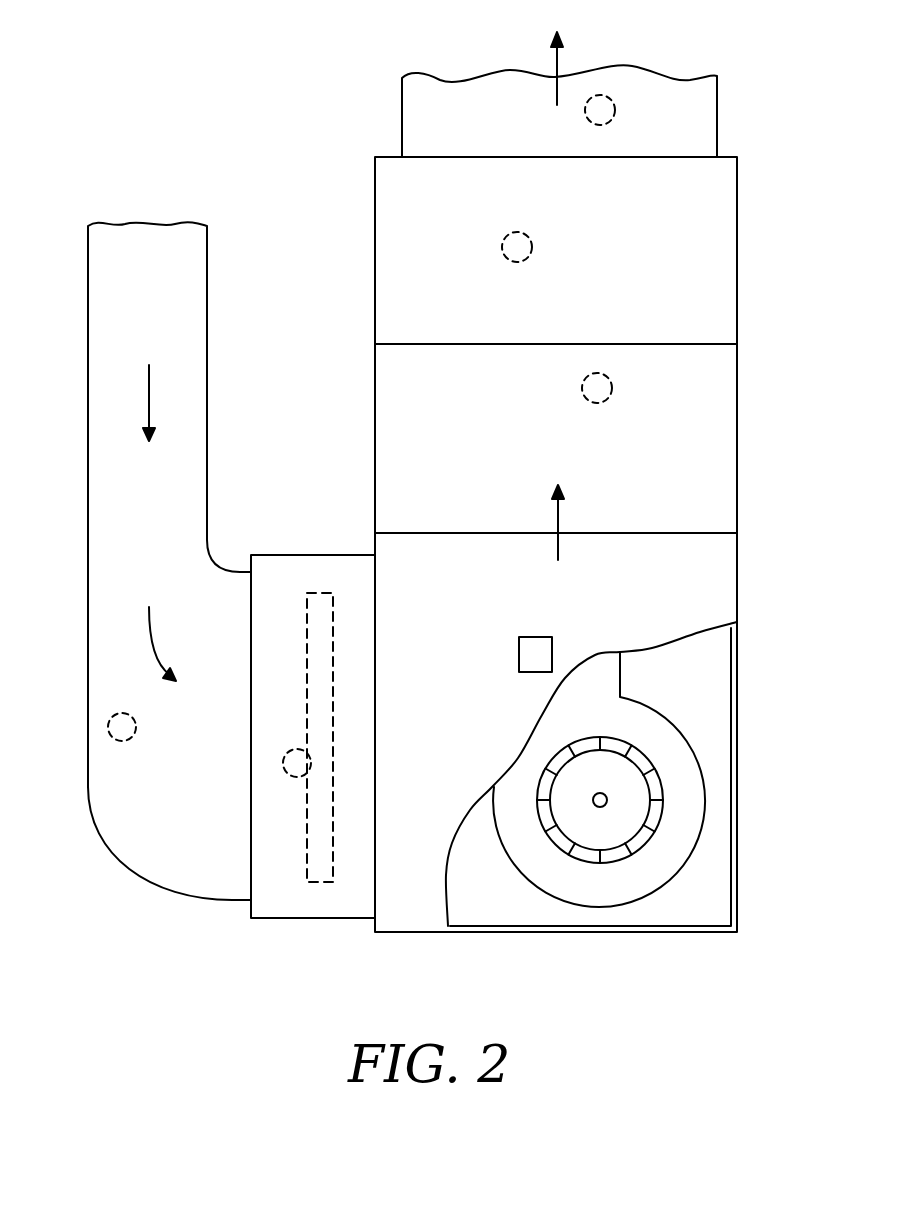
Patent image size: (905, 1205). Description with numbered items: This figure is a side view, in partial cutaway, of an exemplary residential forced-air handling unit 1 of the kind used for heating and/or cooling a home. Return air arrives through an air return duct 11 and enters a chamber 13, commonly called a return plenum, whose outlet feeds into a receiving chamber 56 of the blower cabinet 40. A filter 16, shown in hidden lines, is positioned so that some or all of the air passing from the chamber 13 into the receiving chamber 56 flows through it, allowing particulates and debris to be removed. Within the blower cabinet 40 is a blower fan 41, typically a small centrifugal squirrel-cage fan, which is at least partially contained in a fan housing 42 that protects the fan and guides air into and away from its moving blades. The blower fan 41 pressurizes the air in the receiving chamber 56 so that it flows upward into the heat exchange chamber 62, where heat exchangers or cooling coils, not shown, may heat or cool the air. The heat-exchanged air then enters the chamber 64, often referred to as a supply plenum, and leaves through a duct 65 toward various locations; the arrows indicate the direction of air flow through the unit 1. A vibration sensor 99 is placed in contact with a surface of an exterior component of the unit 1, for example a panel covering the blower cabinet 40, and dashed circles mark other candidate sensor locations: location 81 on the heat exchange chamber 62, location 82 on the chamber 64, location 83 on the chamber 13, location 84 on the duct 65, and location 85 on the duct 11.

The residential forced-air handling unit 1 is at (157, 88).
The air return duct 11 is at (207, 325).
The chamber (return plenum) 13 is at (277, 570).
The filter 16 is at (327, 882).
The blower cabinet 40 is at (737, 580).
The blower fan 41 is at (640, 750).
The fan housing 42 is at (703, 770).
The receiving chamber 56 is at (493, 903).
The heat exchange chamber 62 is at (737, 437).
The chamber (supply plenum) 64 is at (737, 235).
The duct 65 is at (717, 103).
The sensor location on heat exchange chamber 81 is at (603, 388).
The sensor location on supply plenum chamber 82 is at (523, 247).
The sensor location on return plenum chamber 83 is at (290, 763).
The sensor location on supply duct 84 is at (606, 112).
The sensor location on air return duct 85 is at (118, 727).
The vibration sensor 99 is at (525, 655).